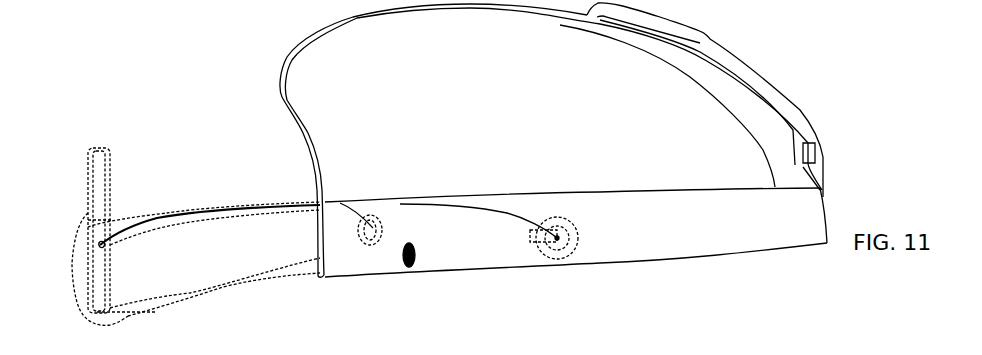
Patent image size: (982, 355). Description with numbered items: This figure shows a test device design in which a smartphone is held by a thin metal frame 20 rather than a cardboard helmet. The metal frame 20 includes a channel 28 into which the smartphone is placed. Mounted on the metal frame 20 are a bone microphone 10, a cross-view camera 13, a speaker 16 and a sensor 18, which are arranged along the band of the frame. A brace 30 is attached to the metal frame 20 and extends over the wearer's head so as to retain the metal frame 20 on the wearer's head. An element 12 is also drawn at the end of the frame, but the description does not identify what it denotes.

The bone microphone 10 is at (570, 253).
The clip 12 is at (100, 183).
The cross-view camera 13 is at (363, 247).
The speaker 16 is at (410, 267).
The sensor 18 is at (550, 257).
The metal frame 20 is at (257, 263).
The channel 28 is at (196, 276).
The brace 30 is at (278, 80).